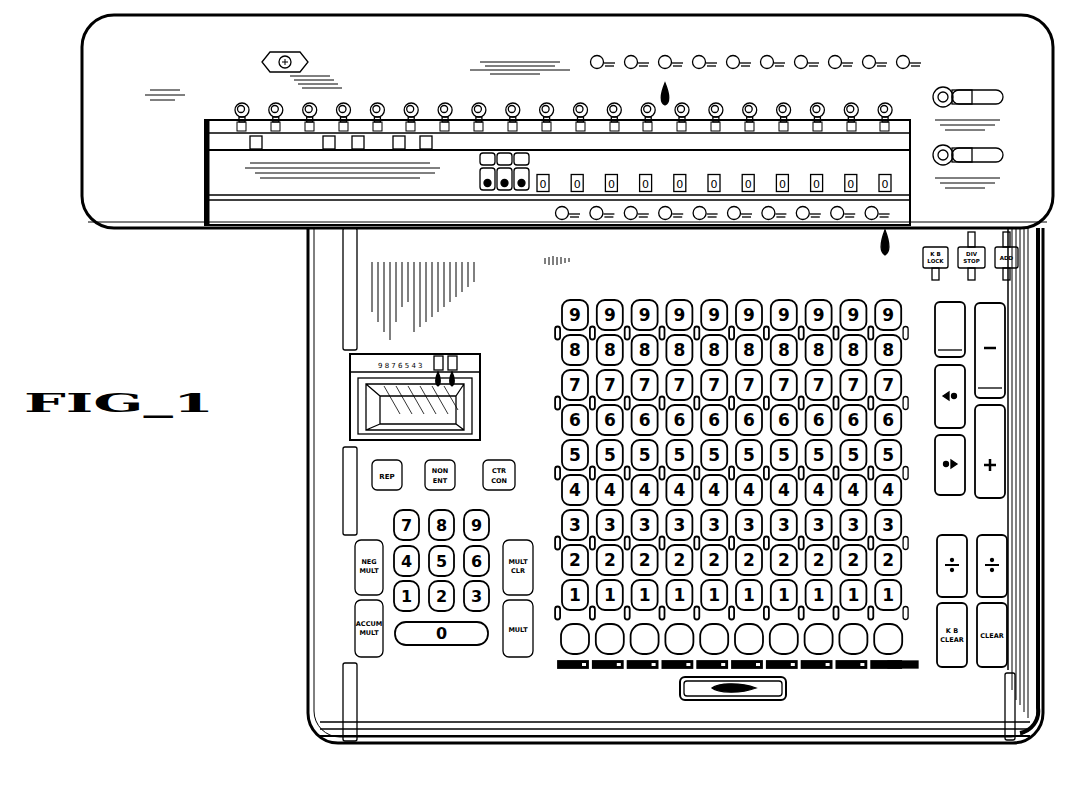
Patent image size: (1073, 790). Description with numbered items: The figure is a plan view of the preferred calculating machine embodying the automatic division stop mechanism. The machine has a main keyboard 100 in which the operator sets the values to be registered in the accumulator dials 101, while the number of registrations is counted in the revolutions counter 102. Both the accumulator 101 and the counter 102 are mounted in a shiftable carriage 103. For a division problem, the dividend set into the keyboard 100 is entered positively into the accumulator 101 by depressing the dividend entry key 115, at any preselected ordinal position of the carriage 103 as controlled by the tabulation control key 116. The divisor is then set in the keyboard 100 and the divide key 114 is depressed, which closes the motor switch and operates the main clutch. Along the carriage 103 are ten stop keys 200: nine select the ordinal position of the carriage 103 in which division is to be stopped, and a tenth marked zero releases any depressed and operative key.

The main keyboard 100 is at (615, 300).
The accumulator dials 101 is at (433, 116).
The revolutions counter 102 is at (541, 194).
The shiftable carriage 103 is at (406, 59).
The divide key 114 is at (942, 540).
The dividend entry key 115 is at (936, 306).
The tabulation control key 116 is at (727, 221).
The stop keys 200 is at (597, 57).